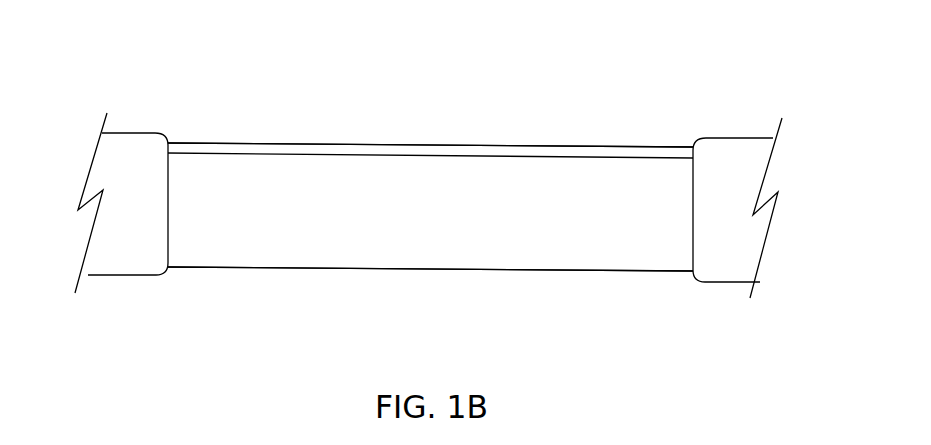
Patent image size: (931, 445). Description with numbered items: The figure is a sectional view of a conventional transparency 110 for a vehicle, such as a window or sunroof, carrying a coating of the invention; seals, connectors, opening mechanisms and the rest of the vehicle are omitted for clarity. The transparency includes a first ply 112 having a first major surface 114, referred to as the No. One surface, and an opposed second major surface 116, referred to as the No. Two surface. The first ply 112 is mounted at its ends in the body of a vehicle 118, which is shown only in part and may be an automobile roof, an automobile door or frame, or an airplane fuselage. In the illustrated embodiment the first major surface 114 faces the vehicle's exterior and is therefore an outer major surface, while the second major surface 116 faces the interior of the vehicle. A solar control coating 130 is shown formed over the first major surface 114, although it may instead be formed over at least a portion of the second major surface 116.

The transparency 110 is at (535, 113).
The first ply 112 is at (437, 173).
The first major surface 114 is at (303, 147).
The second major surface 116 is at (546, 270).
The body of a vehicle 118 is at (137, 148).
The solar control coating 130 is at (243, 148).